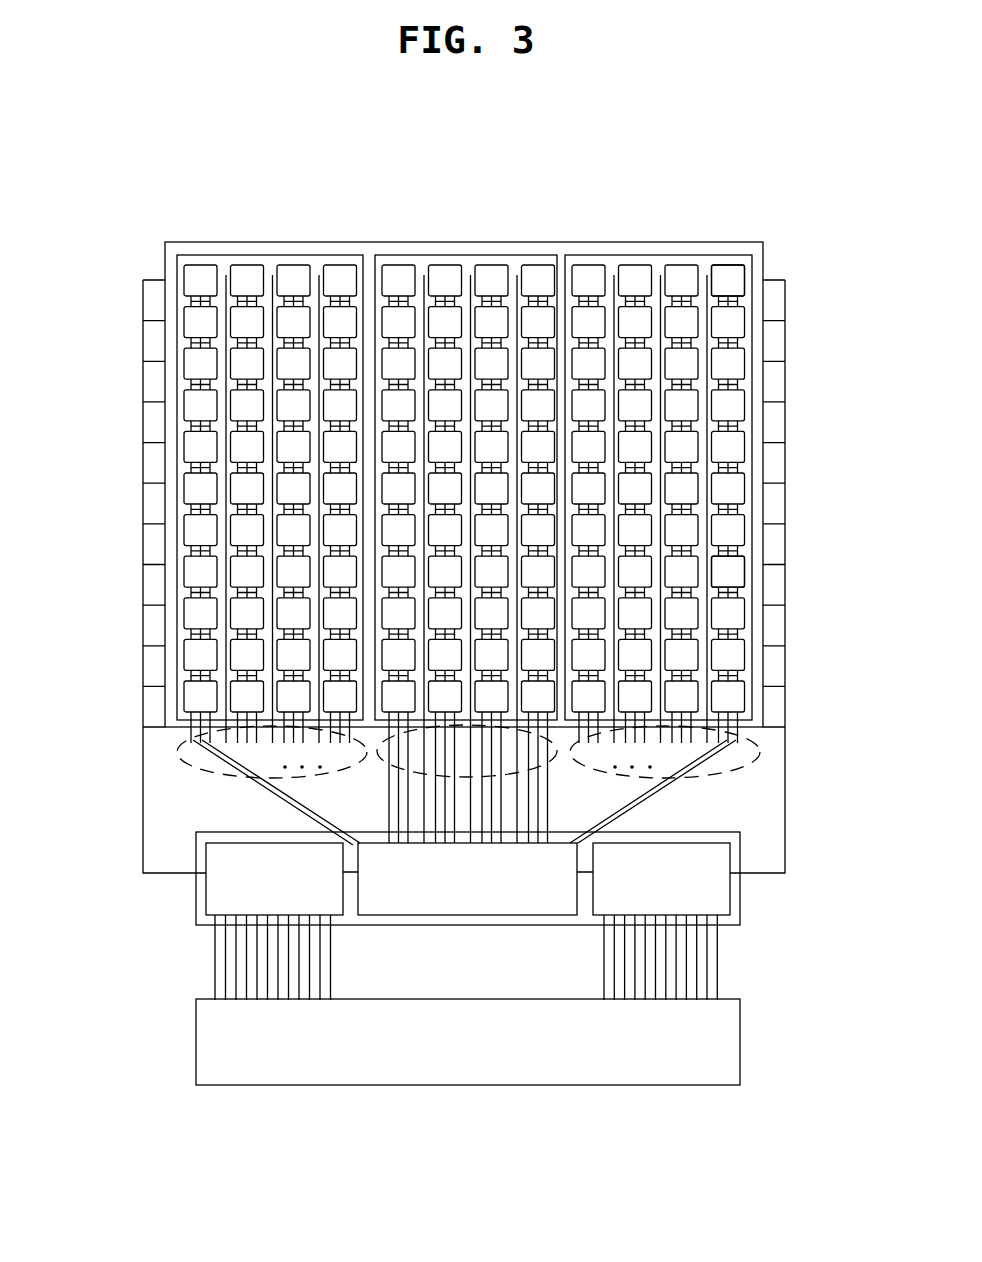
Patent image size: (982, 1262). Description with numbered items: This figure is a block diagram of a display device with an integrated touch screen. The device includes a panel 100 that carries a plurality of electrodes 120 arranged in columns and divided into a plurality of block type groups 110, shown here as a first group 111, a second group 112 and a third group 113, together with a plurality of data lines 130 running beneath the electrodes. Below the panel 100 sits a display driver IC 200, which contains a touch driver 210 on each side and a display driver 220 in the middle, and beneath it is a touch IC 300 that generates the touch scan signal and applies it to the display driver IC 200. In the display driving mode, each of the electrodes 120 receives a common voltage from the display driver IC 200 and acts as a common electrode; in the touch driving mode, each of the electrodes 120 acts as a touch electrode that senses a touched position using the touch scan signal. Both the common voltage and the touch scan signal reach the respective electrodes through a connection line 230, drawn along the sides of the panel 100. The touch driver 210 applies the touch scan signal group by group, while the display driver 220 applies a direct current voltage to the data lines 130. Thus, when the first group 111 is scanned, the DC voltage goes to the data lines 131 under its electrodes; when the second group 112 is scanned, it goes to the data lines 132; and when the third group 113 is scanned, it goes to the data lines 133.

The panel 100 is at (166, 244).
The block type groups 110 is at (668, 182).
The first group 111 is at (272, 255).
The second group 112 is at (466, 255).
The third group 113 is at (658, 255).
The electrodes 120 is at (745, 265).
The data lines 130 is at (745, 550).
The data lines 131 is at (177, 752).
The data lines 132 is at (552, 758).
The data lines 133 is at (760, 752).
The display driver IC 200 is at (740, 917).
The touch driver 210 is at (206, 853).
The display driver 220 is at (448, 915).
The connection line 230 is at (143, 513).
The touch IC 300 is at (740, 1040).